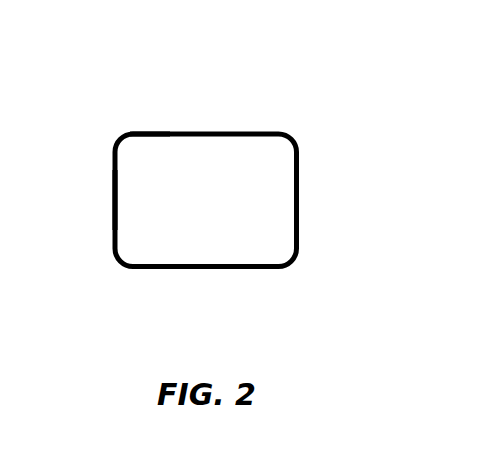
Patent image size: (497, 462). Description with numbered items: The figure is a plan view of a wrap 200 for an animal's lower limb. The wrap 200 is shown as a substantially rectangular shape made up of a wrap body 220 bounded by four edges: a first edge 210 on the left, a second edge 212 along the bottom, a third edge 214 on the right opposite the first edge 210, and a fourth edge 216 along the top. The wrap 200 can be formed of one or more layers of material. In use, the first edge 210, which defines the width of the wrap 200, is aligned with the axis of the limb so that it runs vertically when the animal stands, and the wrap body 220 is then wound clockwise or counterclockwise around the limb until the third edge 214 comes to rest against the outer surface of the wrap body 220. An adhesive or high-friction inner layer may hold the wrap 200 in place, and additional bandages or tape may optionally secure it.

The wrap 200 is at (240, 76).
The first edge 210 is at (113, 202).
The second edge 212 is at (207, 266).
The third edge 214 is at (299, 198).
The fourth edge 216 is at (160, 131).
The wrap body 220 is at (248, 183).